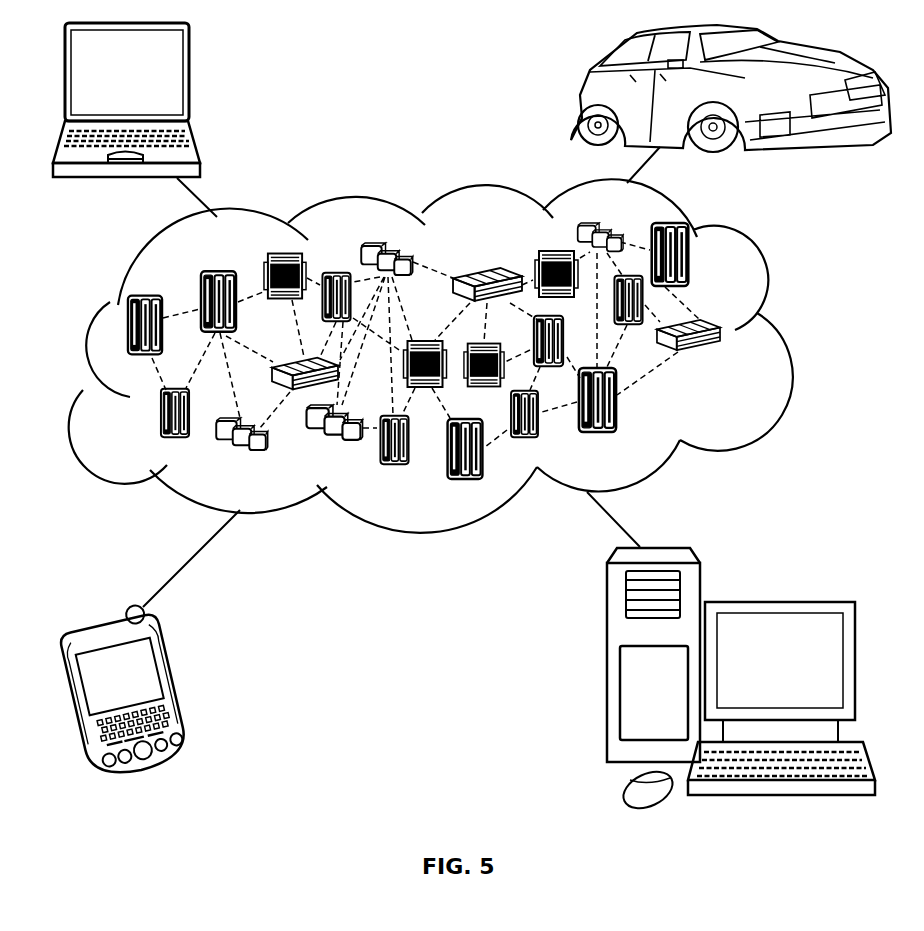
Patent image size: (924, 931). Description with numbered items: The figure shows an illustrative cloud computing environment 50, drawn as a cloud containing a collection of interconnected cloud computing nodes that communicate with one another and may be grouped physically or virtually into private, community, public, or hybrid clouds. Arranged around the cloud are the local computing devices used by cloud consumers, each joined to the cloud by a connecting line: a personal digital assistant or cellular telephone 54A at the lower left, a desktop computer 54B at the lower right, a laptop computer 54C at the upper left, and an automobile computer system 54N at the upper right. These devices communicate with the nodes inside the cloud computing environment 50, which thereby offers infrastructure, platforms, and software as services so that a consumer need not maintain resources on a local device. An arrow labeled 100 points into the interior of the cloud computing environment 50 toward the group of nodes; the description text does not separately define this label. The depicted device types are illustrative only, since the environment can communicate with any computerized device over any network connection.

The laptop computer 54C is at (190, 79).
The automobile computer system 54N is at (582, 92).
The cloud computing environment 50 is at (772, 333).
The cloud computing nodes 100 is at (730, 364).
The desktop computer 54B is at (777, 602).
The personal digital assistant (PDA) or cellular telephone 54A is at (178, 691).